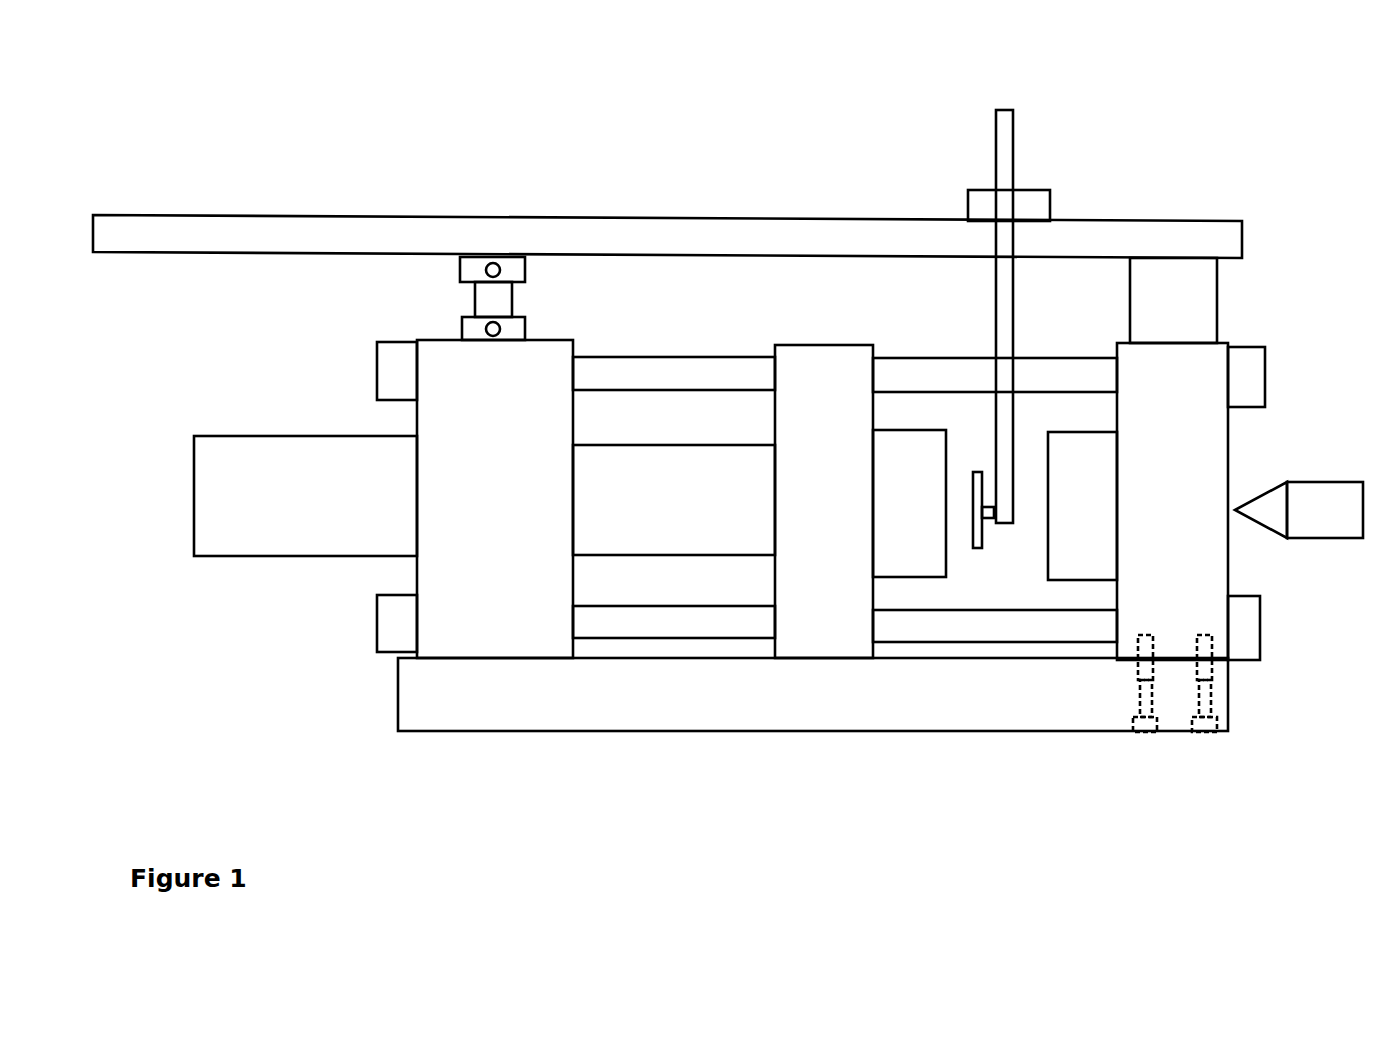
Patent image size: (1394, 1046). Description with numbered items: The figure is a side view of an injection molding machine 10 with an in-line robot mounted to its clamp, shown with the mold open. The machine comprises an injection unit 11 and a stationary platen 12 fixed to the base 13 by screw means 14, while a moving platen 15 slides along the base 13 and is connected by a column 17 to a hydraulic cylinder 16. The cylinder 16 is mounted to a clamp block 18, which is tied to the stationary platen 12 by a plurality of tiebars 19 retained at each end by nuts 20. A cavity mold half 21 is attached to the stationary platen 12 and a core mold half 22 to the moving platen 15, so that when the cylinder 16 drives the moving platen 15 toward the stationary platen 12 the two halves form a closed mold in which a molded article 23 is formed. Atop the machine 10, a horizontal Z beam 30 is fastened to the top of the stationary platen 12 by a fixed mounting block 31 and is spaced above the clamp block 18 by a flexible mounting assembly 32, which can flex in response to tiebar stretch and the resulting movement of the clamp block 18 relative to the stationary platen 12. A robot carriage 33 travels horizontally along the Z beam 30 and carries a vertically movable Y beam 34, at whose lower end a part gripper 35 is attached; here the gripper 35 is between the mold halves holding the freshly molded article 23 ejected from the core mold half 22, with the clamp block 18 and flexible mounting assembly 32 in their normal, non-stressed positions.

The injection molding machine 10 is at (213, 617).
The injection unit 11 is at (1325, 500).
The stationary platen 12 is at (1170, 356).
The base 13 is at (933, 703).
The screw means 14 is at (1202, 702).
The moving platen 15 is at (802, 608).
The hydraulic cylinder 16 is at (323, 538).
The column 17 is at (637, 532).
The clamp block 18 is at (525, 627).
The tiebars 19 is at (740, 370).
The nuts 20 is at (390, 373).
The cavity mold half 21 is at (1075, 540).
The core mold half 22 is at (905, 543).
The molded article 23 is at (975, 542).
The Z beam 30 is at (702, 252).
The fixed mounting block 31 is at (1182, 278).
The flexible mounting assembly 32 is at (542, 295).
The robot carriage 33 is at (1040, 207).
The Y beam 34 is at (1010, 146).
The part gripper 35 is at (990, 513).